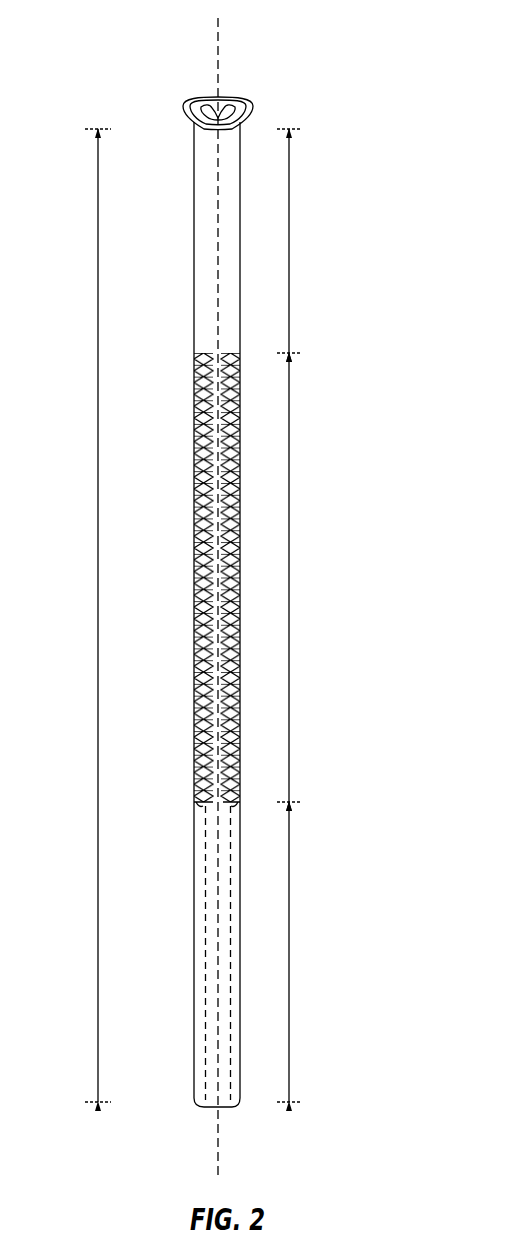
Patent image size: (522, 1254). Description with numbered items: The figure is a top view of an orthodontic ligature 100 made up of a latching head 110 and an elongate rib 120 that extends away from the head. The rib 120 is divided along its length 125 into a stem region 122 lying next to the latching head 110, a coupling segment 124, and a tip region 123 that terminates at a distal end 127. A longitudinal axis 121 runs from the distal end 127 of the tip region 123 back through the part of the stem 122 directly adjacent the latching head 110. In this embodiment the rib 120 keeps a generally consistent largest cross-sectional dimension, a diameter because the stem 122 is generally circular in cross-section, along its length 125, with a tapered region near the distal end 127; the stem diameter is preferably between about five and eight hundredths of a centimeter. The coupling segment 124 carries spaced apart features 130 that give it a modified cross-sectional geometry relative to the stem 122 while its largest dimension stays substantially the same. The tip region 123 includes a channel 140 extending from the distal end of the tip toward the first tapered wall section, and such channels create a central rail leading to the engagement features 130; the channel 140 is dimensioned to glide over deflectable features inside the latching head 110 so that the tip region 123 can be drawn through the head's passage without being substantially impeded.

The orthodontic ligature 100 is at (356, 125).
The latching head 110 is at (200, 105).
The elongate rib 120 is at (194, 296).
The longitudinal axis 121 is at (220, 52).
The stem region 122 is at (289, 240).
The tip region 123 is at (289, 952).
The coupling segment 124 is at (289, 578).
The length 125 is at (98, 510).
The distal end 127 is at (231, 1108).
The spaced apart features 130 is at (194, 582).
The channel 140 is at (205, 1018).